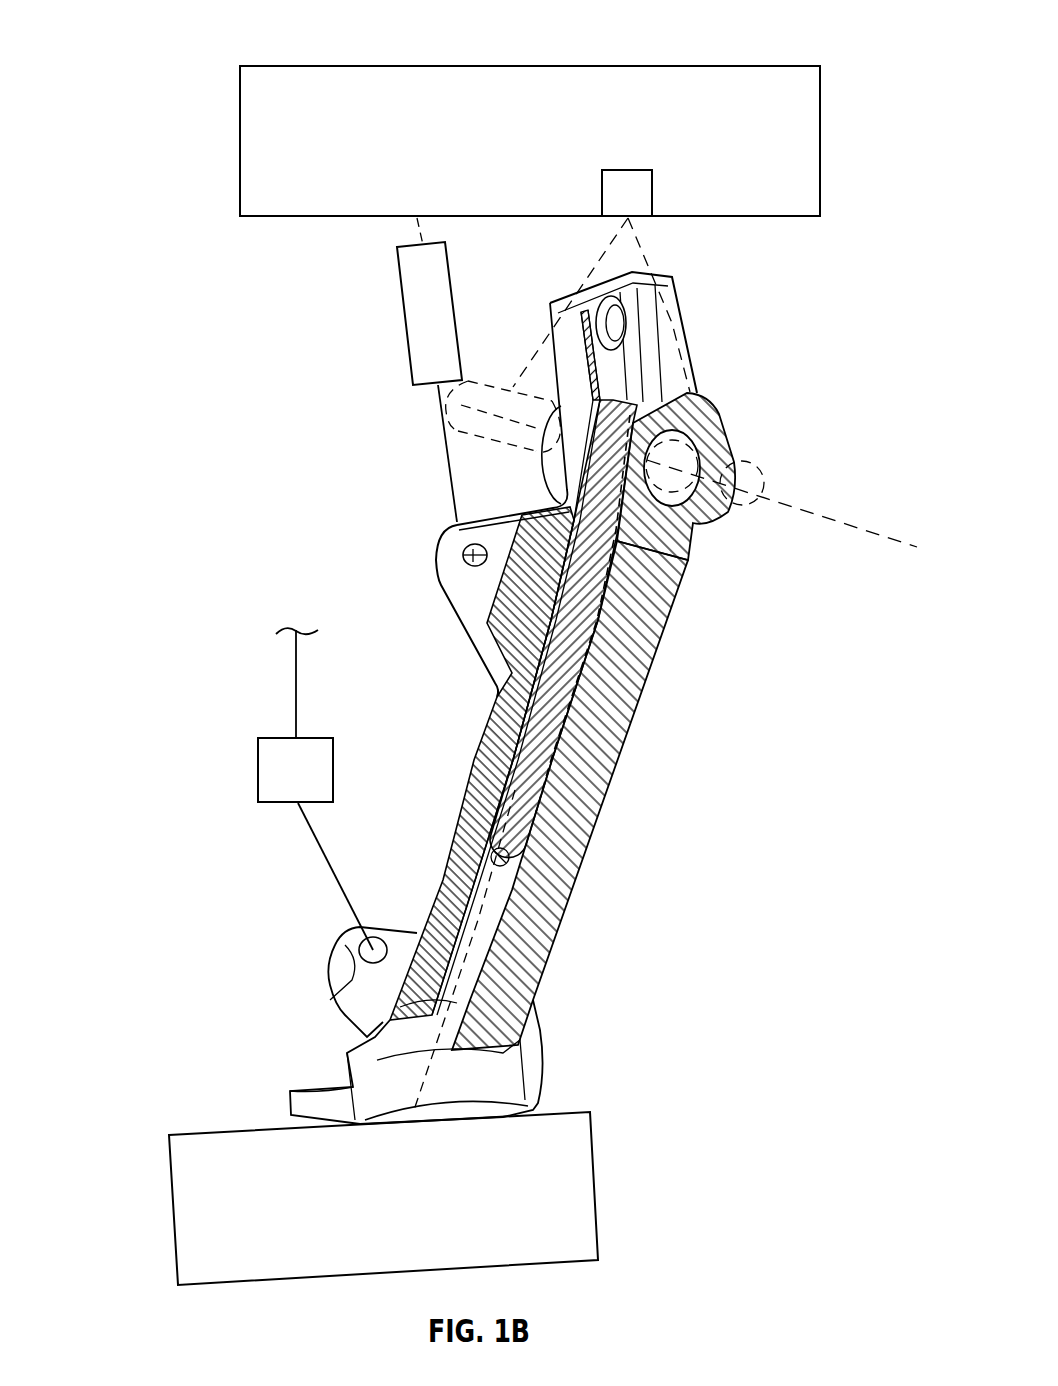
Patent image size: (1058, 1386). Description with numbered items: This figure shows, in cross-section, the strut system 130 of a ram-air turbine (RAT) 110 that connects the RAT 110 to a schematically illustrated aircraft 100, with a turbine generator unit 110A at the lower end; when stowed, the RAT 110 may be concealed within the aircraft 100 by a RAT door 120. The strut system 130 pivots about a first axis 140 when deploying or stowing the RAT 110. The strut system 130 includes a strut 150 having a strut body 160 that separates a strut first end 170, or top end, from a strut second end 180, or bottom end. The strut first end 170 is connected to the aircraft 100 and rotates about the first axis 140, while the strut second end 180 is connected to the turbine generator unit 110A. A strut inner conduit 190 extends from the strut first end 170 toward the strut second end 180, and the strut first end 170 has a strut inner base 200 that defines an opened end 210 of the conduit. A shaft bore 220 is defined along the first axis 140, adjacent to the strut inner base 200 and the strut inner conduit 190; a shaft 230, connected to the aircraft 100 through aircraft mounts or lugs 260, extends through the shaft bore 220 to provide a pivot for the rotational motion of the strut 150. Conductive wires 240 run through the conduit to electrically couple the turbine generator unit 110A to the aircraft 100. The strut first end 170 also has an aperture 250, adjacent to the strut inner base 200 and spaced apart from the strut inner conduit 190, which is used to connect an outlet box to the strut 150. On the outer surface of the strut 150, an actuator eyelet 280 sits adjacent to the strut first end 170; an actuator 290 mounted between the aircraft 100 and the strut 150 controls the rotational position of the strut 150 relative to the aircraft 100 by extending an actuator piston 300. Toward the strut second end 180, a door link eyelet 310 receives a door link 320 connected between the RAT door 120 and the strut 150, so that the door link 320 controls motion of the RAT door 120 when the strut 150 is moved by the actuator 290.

The aircraft 100 is at (553, 152).
The ram-air turbine (RAT) 110 is at (115, 708).
The turbine generator unit 110A is at (414, 1211).
The RAT door 120 is at (258, 770).
The strut system 130 is at (160, 48).
The first axis 140 is at (860, 527).
The strut 150 is at (533, 1000).
The strut body 160 is at (585, 836).
The strut first end 170 is at (687, 347).
The strut second end 180 is at (540, 1060).
The strut inner conduit 190 is at (547, 773).
The strut inner base 200 is at (657, 424).
The opened end 210 is at (605, 437).
The shaft bore 220 is at (690, 525).
The shaft 230 is at (757, 490).
The conductive wires 240 is at (452, 1087).
The aperture 250 is at (618, 312).
The aircraft mounts or lugs 260 is at (652, 193).
The actuator eyelet 280 is at (475, 556).
The actuator 290 is at (412, 314).
The actuator piston 300 is at (440, 440).
The door link eyelet 310 is at (360, 950).
The door link 320 is at (318, 857).